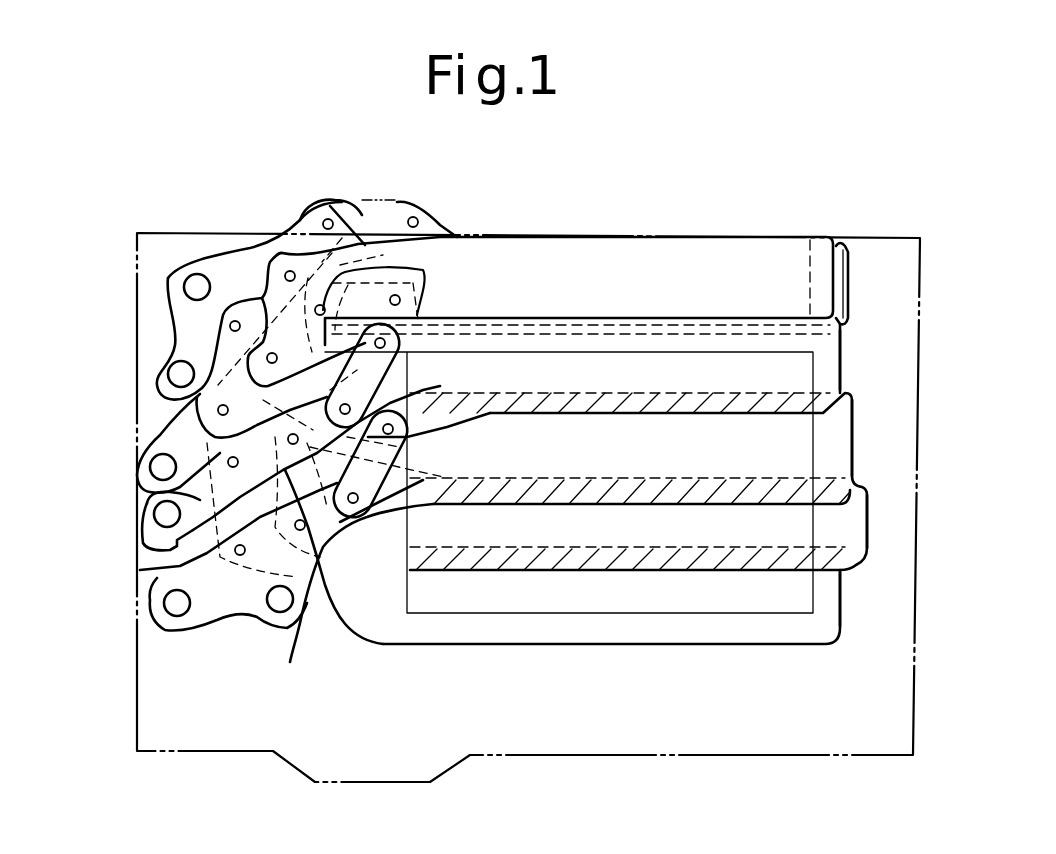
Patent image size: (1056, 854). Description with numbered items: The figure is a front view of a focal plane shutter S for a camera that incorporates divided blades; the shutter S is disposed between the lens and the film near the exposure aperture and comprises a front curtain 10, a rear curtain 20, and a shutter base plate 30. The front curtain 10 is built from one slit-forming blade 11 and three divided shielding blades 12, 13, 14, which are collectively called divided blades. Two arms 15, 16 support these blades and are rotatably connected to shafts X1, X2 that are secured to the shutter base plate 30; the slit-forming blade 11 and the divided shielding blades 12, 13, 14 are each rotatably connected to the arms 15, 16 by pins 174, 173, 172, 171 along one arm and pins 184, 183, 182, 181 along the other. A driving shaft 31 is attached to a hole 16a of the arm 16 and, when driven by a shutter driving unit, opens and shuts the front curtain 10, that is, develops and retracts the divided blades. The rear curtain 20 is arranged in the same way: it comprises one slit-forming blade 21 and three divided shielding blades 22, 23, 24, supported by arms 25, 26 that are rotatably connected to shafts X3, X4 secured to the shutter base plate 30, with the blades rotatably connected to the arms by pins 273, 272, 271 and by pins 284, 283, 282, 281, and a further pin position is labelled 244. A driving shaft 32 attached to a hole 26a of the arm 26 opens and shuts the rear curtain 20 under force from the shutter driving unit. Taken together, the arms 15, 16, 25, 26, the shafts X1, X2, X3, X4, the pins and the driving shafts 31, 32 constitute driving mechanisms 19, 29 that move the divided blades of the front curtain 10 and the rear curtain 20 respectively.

The front curtain 10 is at (667, 656).
The slit-forming blade 11 is at (842, 363).
The divided shielding blade 12 is at (852, 437).
The divided shielding blade 13 is at (867, 530).
The divided shielding blade 14 is at (840, 605).
The arm 15 is at (147, 550).
The arm 16 is at (205, 607).
The hole 16a is at (290, 613).
The pin 171 is at (238, 467).
The pin 172 is at (297, 444).
The pin 173 is at (405, 397).
The pin 174 is at (413, 357).
The pin 181 is at (235, 553).
The pin 182 is at (305, 530).
The pin 183 is at (375, 505).
The pin 184 is at (400, 441).
The driving mechanism 19 is at (172, 655).
The rear curtain 20 is at (645, 226).
The slit-forming blade 21 is at (812, 285).
The divided shielding blade 22 is at (850, 280).
The divided shielding blade 23 is at (850, 308).
The divided shielding blade 24 is at (830, 263).
The pivot pin 244 is at (400, 300).
The arm 25 is at (147, 435).
The arm 26 is at (250, 270).
The hole 26a is at (197, 274).
The pin 271 is at (218, 410).
The pin 272 is at (267, 356).
The pin 273 is at (347, 273).
The pin 281 is at (230, 325).
The pin 282 is at (290, 270).
The pin 283 is at (333, 219).
The pin 284 is at (440, 214).
The driving mechanism 29 is at (135, 198).
The shutter base plate 30 is at (700, 756).
The driving shaft 31 is at (309, 607).
The driving shaft 32 is at (186, 286).
The focal plane shutter S is at (558, 193).
The shaft X1 is at (152, 520).
The shaft X2 is at (163, 605).
The shaft X3 is at (150, 468).
The shaft X4 is at (168, 372).